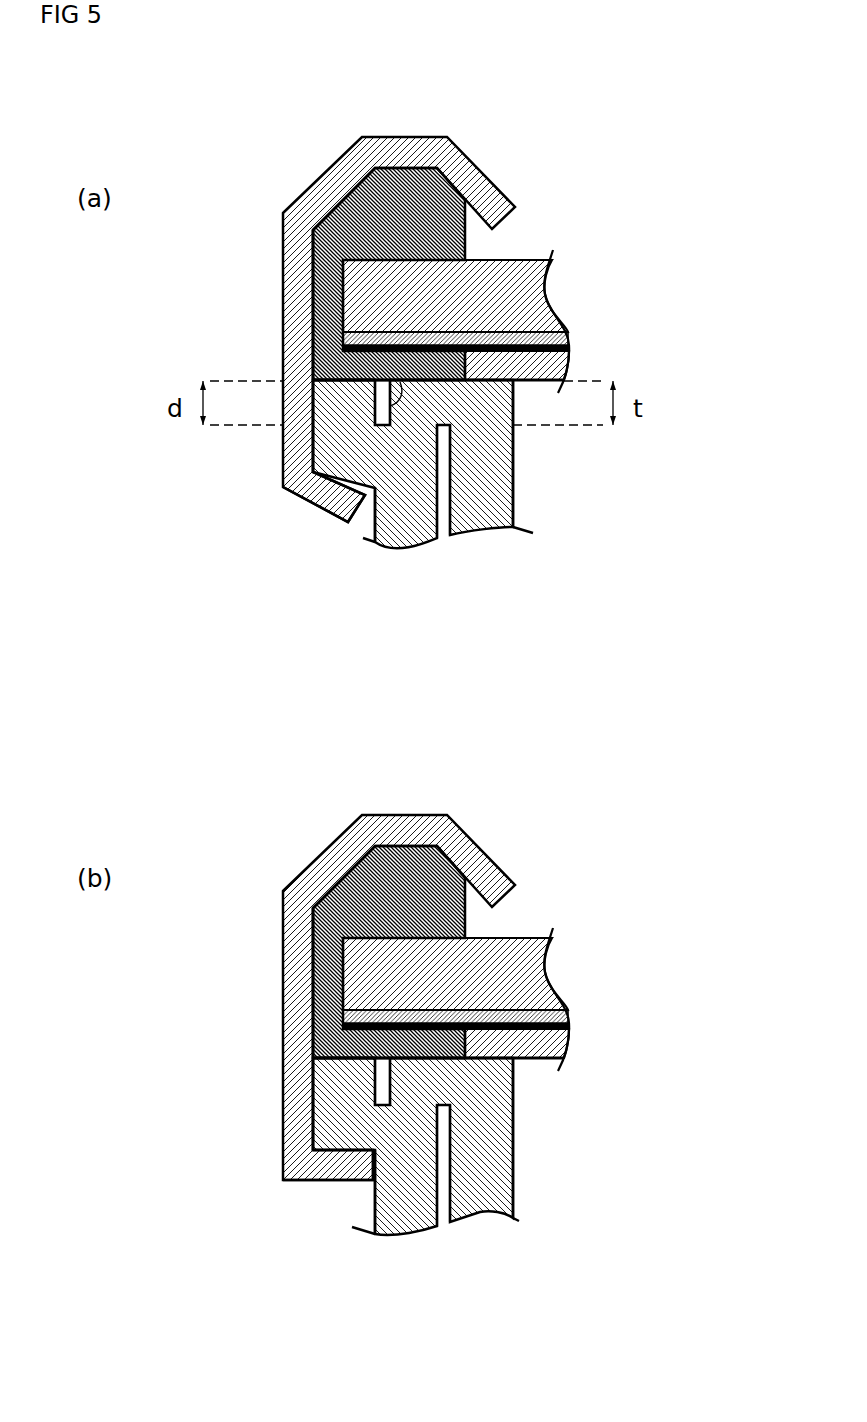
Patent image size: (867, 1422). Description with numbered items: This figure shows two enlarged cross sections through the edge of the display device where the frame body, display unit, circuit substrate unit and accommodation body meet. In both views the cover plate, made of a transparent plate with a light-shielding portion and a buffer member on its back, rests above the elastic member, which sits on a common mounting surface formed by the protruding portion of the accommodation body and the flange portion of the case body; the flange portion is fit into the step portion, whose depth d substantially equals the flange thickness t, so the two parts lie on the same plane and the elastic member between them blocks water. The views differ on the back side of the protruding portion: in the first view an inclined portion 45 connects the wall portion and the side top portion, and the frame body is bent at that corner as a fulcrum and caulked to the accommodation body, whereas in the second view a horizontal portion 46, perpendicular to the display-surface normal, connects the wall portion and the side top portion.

The inclined portion 45 is at (348, 489).
The horizontal portion 46 is at (341, 1152).